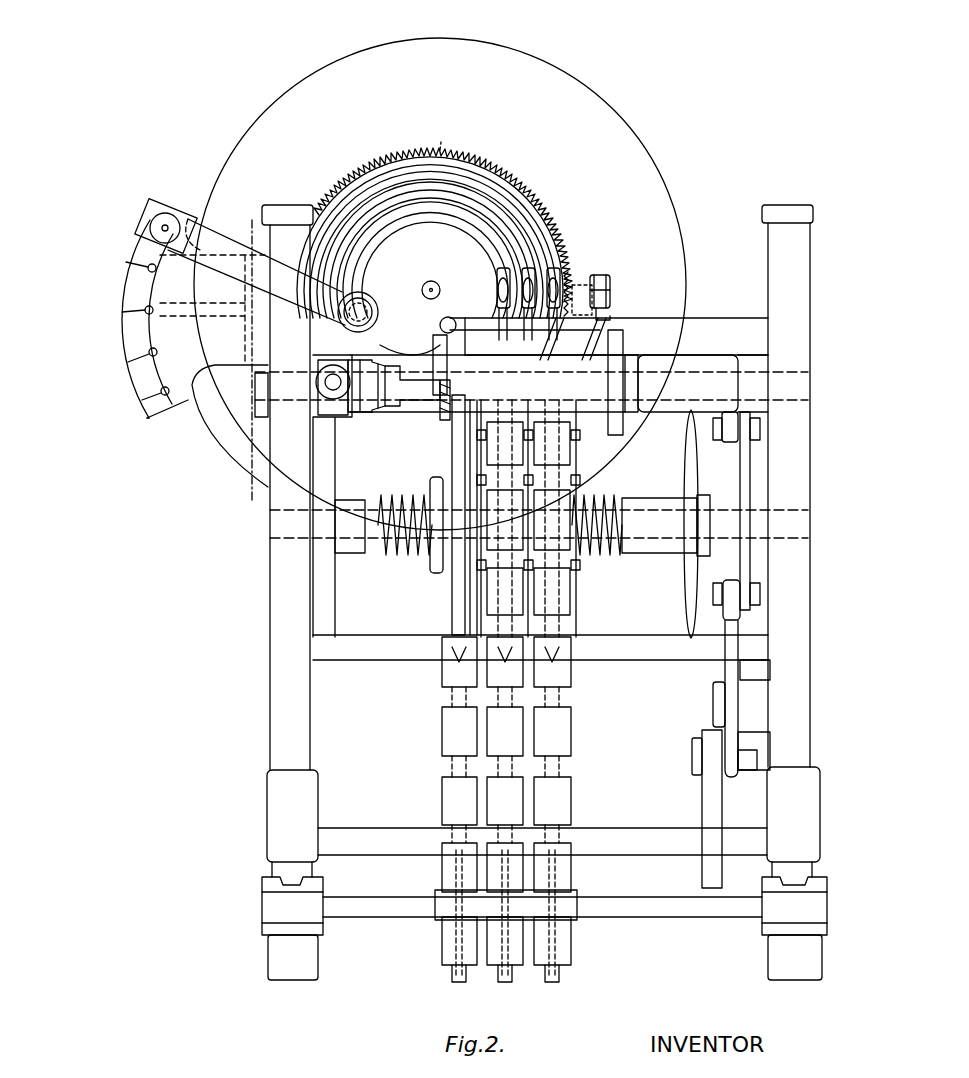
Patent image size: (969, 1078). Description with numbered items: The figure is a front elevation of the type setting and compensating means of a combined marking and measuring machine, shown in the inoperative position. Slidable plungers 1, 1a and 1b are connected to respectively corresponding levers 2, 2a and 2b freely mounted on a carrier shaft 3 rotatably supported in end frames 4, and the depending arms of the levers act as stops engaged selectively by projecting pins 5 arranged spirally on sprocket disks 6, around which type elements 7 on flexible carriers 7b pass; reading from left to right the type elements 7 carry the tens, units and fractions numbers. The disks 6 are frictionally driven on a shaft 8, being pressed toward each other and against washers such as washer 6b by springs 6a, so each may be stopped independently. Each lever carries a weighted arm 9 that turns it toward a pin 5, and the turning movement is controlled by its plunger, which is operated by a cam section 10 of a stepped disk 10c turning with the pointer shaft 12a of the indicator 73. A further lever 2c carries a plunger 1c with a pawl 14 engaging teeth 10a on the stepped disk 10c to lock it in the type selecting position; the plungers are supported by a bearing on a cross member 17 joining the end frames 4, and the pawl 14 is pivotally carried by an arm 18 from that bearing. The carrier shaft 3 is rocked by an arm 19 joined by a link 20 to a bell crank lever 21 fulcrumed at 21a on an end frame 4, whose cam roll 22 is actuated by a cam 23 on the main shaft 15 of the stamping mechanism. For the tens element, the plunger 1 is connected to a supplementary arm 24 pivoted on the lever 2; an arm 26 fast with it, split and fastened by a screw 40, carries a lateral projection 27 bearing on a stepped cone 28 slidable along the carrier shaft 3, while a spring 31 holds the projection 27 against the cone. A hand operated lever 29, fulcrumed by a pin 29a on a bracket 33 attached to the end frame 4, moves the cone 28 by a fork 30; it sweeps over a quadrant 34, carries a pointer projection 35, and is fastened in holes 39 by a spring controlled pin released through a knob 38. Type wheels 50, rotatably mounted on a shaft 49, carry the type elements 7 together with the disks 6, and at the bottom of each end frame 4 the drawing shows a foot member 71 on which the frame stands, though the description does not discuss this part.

The slidable plunger 1 is at (497, 285).
The slidable plunger 1a is at (522, 272).
The slidable plunger 1b is at (556, 266).
The plunger 1c is at (606, 274).
The lever 2 is at (433, 345).
The lever 2a is at (540, 365).
The lever 2b is at (585, 365).
The further lever 2c is at (623, 362).
The carrier shaft 3 is at (708, 380).
The end frame 4 is at (768, 252).
The projecting pin 5 is at (572, 455).
The sprocket disk 6 is at (455, 628).
The spring 6a is at (630, 556).
The washer 6b is at (430, 483).
The type element 7 is at (572, 602).
The flexible carrier 7b is at (505, 762).
The shaft 8 is at (672, 515).
The weighted arm 9 is at (618, 428).
The cam section 10 is at (478, 215).
The teeth 10a is at (438, 148).
The stepped disk 10c is at (348, 185).
The pointer shaft 12a is at (431, 281).
The pawl 14 is at (578, 292).
The main shaft 15 is at (608, 840).
The cross member 17 is at (728, 330).
The arm 18 is at (600, 318).
The arm 19 is at (727, 440).
The link 20 is at (742, 478).
The bell crank lever 21 is at (725, 672).
The fulcrum 21a is at (713, 705).
The cam roll 22 is at (702, 780).
The cam 23 is at (702, 806).
The supplementary arm 24 is at (470, 318).
The arm 26 is at (412, 360).
The lateral projection 27 is at (410, 402).
The stepped cone 28 is at (350, 415).
The hand operated lever 29 is at (222, 250).
The pin 29a is at (365, 300).
The fork 30 is at (320, 412).
The spring 31 is at (442, 420).
The bracket 33 is at (222, 365).
The quadrant 34 is at (150, 420).
The projection 35 is at (145, 208).
The knob 38 is at (168, 220).
The holes 39 is at (195, 312).
The screw 40 is at (440, 322).
The shaft 49 is at (628, 905).
The type wheel 50 is at (455, 878).
The foot 71 is at (318, 905).
The indicator 73 is at (612, 120).